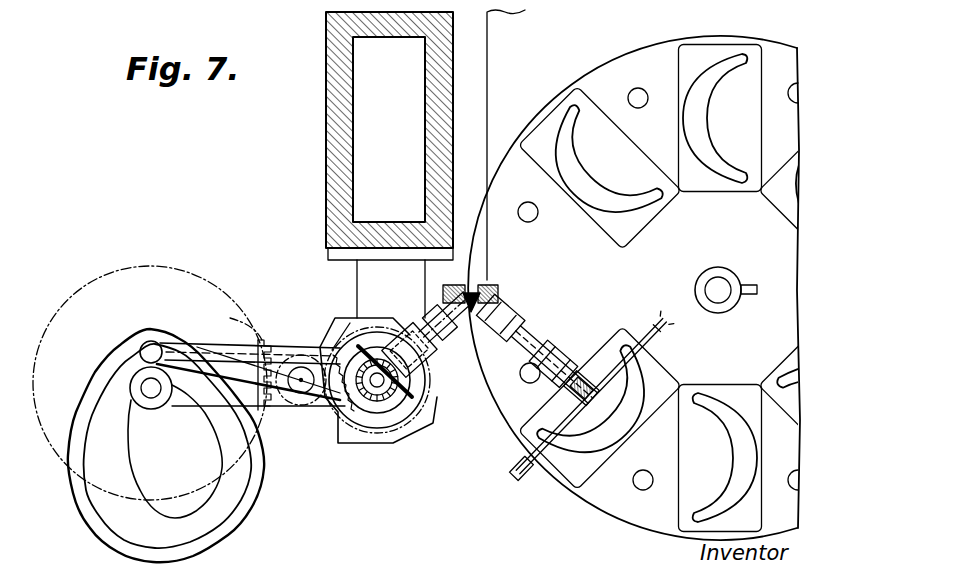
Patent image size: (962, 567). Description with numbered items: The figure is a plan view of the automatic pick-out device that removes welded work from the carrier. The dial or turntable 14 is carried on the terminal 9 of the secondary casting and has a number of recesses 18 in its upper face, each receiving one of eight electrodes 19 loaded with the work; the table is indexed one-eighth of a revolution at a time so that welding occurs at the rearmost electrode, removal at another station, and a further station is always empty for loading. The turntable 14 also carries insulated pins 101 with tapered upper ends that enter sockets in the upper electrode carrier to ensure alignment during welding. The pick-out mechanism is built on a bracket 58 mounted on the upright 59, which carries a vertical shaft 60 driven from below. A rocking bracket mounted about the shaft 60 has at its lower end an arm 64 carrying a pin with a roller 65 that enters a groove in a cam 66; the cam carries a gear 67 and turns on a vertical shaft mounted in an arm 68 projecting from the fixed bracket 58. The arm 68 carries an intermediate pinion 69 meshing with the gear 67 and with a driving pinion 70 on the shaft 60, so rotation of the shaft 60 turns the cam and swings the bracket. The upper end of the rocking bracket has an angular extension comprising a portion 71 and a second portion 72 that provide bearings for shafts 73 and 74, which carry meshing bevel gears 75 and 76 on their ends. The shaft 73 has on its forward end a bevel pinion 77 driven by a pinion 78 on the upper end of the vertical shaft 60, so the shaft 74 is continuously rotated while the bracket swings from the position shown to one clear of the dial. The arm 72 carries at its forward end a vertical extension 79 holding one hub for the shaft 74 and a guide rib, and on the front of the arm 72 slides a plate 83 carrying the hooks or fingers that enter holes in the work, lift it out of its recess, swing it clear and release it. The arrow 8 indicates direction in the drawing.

The direction arrow 8 is at (328, 498).
The terminal of the secondary casting 9 is at (635, 447).
The dial or turntable 14 is at (694, 288).
The recesses 18 is at (676, 65).
The electrodes 19 is at (690, 58).
The bracket 58 is at (391, 289).
The upright 59 is at (338, 168).
The vertical shaft 60 is at (377, 385).
The arm 64 is at (232, 344).
The roller 65 is at (150, 342).
The cam 66 is at (100, 370).
The gear 67 is at (245, 318).
The arm 68 is at (262, 350).
The intermediate pinion 69 is at (303, 354).
The driving pinion 70 is at (367, 400).
The portion 71 is at (417, 318).
The second portion 72 is at (519, 375).
The shaft 73 is at (437, 347).
The shaft 74 is at (538, 340).
The bevel gear 75 is at (470, 290).
The bevel gear 76 is at (490, 300).
The bevel pinion 77 is at (397, 427).
The pinion 78 is at (347, 430).
The vertical extension 79 is at (586, 372).
The plate 83 is at (556, 408).
The insulated pins 101 is at (636, 88).